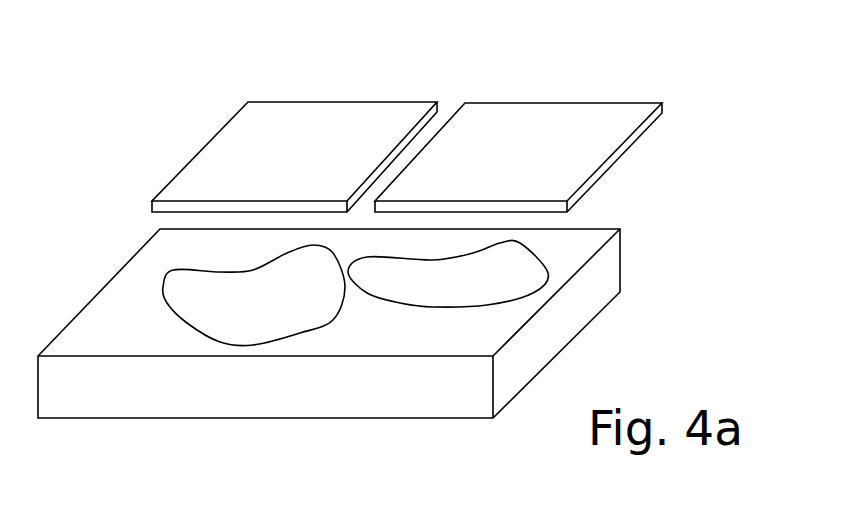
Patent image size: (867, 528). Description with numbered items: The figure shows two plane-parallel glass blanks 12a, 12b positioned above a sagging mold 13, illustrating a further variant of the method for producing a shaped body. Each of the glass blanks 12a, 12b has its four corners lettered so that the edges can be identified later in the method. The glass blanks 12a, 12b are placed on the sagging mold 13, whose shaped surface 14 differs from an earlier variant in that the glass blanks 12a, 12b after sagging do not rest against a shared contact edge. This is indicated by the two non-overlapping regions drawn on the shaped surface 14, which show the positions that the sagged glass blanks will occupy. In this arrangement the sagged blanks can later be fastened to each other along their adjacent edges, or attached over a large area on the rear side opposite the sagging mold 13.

The glass blank 12a is at (317, 118).
The glass blank 12b is at (508, 122).
The sagging mold 13 is at (215, 393).
The shaped surface 14 is at (117, 293).